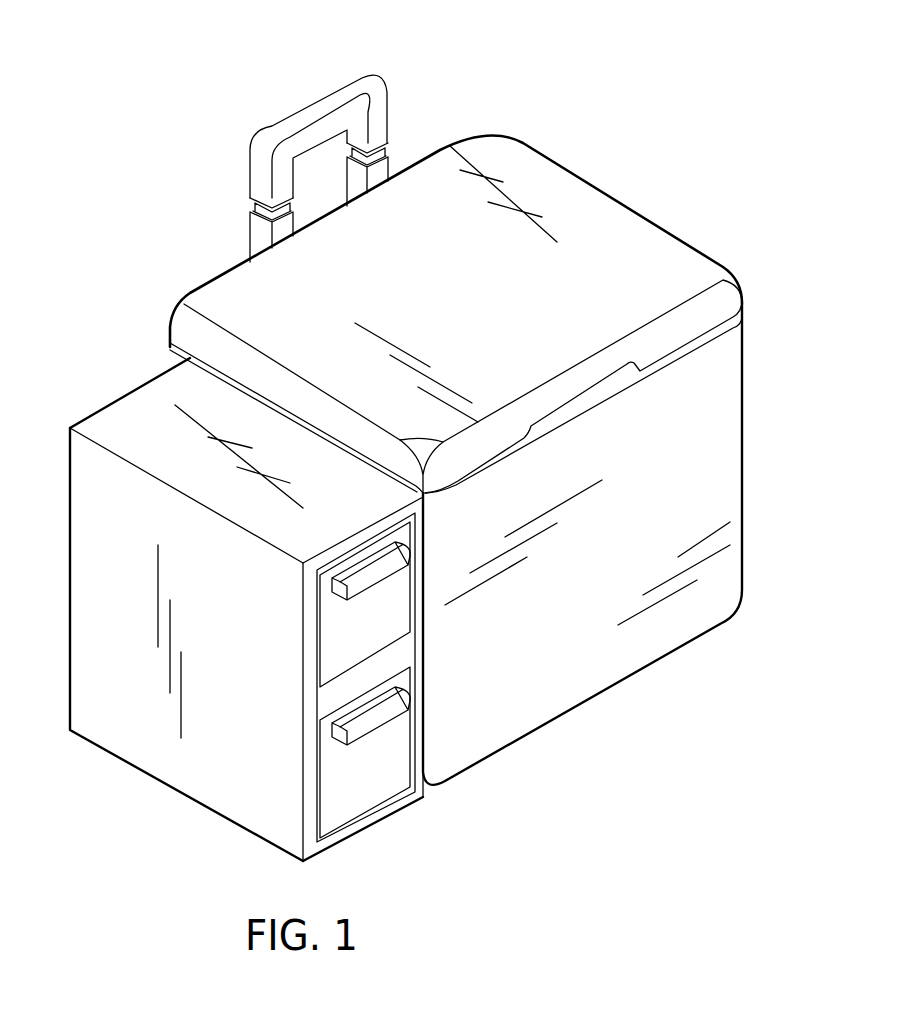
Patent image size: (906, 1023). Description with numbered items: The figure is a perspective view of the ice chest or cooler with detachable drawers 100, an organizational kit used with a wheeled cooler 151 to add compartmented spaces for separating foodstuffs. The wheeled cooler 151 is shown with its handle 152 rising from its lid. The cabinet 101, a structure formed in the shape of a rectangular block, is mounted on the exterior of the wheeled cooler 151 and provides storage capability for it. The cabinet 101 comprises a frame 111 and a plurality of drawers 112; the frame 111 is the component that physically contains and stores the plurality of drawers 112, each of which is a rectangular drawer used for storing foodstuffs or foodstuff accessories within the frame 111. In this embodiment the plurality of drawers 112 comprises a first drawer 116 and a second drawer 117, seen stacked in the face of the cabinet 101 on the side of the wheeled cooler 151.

The ice chest or cooler with detachable drawers 100 is at (109, 138).
The cabinet 101 is at (113, 426).
The frame 111 is at (123, 738).
The plurality of drawers 112 is at (330, 760).
The first drawer 116 is at (383, 627).
The second drawer 117 is at (393, 743).
The wheeled cooler 151 is at (730, 378).
The handle 152 is at (302, 118).